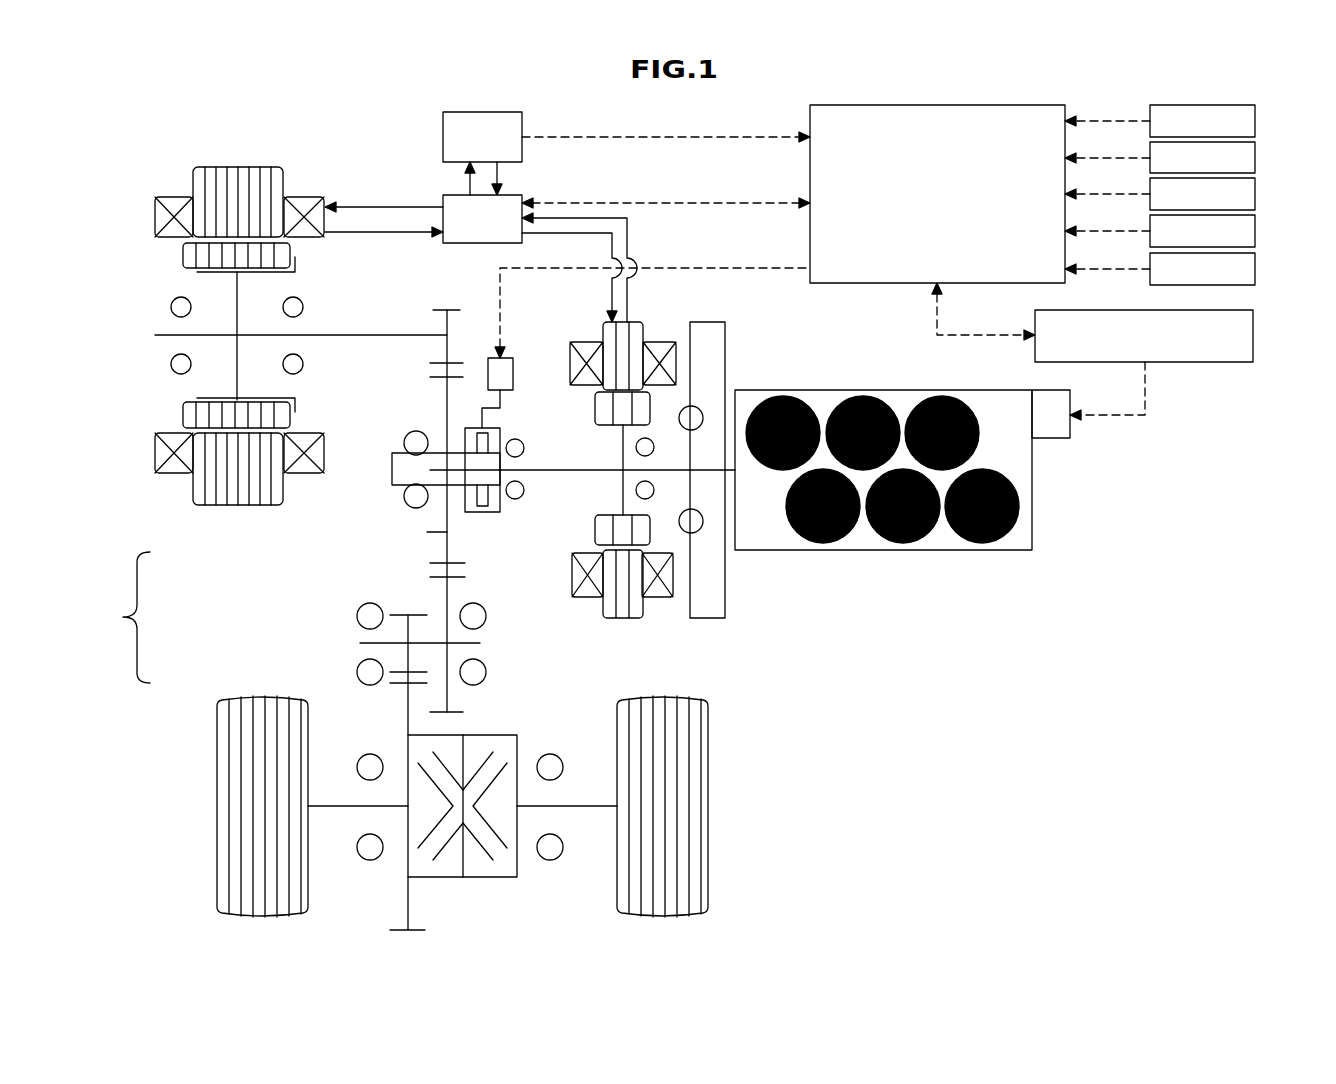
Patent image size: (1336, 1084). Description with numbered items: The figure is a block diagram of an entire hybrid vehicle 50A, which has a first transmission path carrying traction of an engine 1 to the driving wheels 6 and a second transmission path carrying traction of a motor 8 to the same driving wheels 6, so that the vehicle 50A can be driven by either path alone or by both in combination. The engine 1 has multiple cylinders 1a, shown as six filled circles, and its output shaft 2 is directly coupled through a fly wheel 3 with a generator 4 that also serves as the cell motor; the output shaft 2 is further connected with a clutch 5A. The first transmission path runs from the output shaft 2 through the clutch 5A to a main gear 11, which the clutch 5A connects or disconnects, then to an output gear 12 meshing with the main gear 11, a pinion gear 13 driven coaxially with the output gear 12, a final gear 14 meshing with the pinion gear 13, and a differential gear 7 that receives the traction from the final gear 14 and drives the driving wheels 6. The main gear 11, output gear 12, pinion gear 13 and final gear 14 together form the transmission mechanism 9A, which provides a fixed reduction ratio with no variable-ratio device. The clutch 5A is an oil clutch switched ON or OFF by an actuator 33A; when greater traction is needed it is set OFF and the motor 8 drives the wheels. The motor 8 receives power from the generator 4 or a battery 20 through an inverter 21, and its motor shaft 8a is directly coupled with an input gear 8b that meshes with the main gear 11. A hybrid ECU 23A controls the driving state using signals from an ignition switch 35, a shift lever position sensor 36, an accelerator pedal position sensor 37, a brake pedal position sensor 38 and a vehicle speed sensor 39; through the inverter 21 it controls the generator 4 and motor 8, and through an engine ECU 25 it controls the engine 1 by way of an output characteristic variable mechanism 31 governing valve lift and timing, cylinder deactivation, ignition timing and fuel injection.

The engine 1 is at (975, 499).
The cylinders 1a is at (978, 440).
The output shaft 2 is at (665, 472).
The fly wheel 3 is at (725, 363).
The generator 4 is at (641, 322).
The clutch 5A is at (497, 513).
The driving wheels 6 is at (710, 756).
The differential gear 7 is at (445, 878).
The motor 8 is at (218, 167).
The motor shaft 8a is at (385, 337).
The input gear 8b is at (445, 322).
The transmission mechanism 9A is at (117, 745).
The main gear 11 is at (408, 533).
The output gear 12 is at (447, 588).
The pinion gear 13 is at (398, 643).
The final gear 14 is at (407, 717).
The battery 20 is at (485, 112).
The inverter 21 is at (510, 194).
The hybrid ECU 23A is at (934, 105).
The engine ECU 25 is at (1253, 338).
The output characteristic variable mechanism 31 is at (1070, 436).
The actuator 33A is at (508, 355).
The ignition switch 35 is at (1255, 123).
The shift lever position sensor 36 is at (1255, 160).
The accelerator pedal position sensor 37 is at (1255, 196).
The brake pedal position sensor 38 is at (1255, 233).
The vehicle speed sensor 39 is at (1255, 271).
The hybrid vehicle 50A is at (955, 703).